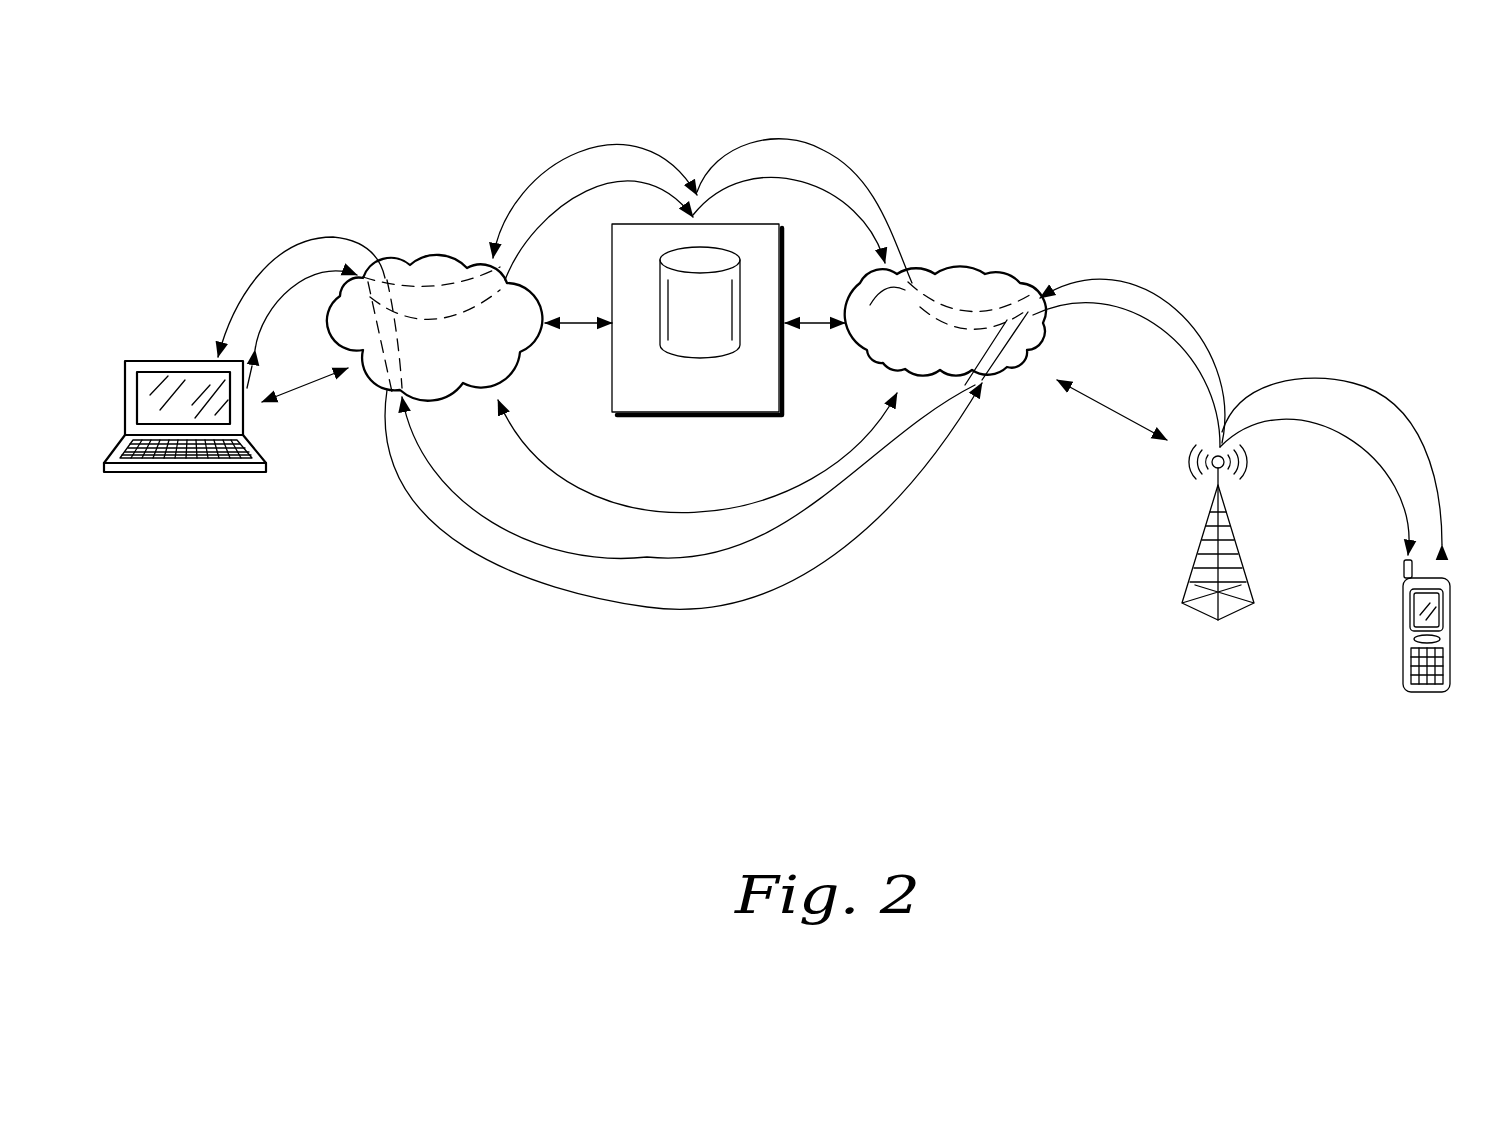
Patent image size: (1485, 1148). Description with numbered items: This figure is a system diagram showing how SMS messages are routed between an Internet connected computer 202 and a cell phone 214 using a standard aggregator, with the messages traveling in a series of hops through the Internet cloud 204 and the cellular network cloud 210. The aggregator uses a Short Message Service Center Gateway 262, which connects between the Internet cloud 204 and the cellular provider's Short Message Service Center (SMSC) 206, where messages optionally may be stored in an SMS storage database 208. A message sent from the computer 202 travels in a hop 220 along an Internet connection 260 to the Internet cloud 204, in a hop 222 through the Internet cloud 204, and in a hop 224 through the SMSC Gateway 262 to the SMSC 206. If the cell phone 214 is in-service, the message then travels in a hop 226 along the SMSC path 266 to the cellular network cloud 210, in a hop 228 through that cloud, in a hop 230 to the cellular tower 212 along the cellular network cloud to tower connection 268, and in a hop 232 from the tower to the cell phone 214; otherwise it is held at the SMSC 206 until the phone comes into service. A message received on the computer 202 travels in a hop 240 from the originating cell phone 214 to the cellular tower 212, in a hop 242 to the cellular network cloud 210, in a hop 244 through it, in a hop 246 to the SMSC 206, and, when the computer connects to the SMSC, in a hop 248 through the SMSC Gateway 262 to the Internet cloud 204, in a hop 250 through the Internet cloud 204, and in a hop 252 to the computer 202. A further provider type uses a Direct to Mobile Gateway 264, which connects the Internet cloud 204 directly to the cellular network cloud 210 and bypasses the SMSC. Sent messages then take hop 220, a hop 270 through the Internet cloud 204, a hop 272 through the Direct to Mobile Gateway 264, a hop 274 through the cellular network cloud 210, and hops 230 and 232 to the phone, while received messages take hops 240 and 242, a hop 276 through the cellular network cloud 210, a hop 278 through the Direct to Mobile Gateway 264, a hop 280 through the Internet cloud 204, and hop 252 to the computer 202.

The Internet connected computer 202 is at (192, 472).
The Internet cloud 204 is at (443, 400).
The Short Message Service Center (SMSC) 206 is at (752, 418).
The SMS storage database 208 is at (690, 360).
The cellular network cloud 210 is at (977, 267).
The cellular tower 212 is at (1236, 614).
The cell phone 214 is at (1432, 694).
The hop 220 is at (288, 306).
The hop 222 is at (480, 318).
The hop 224 is at (603, 187).
The hop 226 is at (793, 187).
The hop 228 is at (940, 315).
The hop 230 is at (1103, 306).
The hop 232 is at (1343, 445).
The hop 240 is at (1375, 393).
The hop 242 is at (1160, 287).
The hop 244 is at (1008, 290).
The hop 246 is at (790, 147).
The hop 248 is at (614, 147).
The hop 250 is at (435, 290).
The hop 252 is at (322, 234).
The Internet connection 260 is at (297, 390).
The Short Message Service Center Gateway 262 is at (582, 325).
The Direct to Mobile Gateway 264 is at (655, 508).
The SMSC path 266 is at (808, 327).
The cellular network cloud to tower connection 268 is at (1128, 422).
The hop 270 is at (361, 337).
The hop 272 is at (715, 608).
The hop 274 is at (1010, 355).
The hop 276 is at (980, 360).
The hop 278 is at (655, 556).
The hop 280 is at (398, 333).